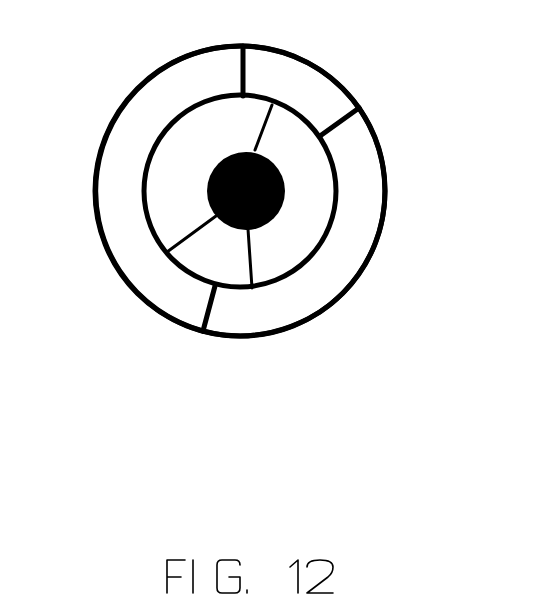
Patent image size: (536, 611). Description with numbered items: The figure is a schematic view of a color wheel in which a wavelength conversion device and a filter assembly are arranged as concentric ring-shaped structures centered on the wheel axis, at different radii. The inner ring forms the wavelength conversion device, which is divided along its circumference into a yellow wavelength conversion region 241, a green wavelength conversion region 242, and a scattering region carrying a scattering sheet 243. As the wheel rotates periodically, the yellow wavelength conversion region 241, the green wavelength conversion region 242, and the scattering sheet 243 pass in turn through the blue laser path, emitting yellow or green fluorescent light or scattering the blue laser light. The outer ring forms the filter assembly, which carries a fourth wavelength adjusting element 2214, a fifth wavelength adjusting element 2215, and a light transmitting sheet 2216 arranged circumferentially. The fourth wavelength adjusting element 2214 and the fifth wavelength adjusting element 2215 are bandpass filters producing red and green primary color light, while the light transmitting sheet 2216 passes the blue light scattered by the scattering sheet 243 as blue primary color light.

The yellow wavelength conversion region 241 is at (177, 145).
The green wavelength conversion region 242 is at (317, 193).
The scattering sheet 243 is at (232, 270).
The fourth wavelength adjusting element 2214 is at (125, 250).
The fifth wavelength adjusting element 2215 is at (310, 292).
The light transmitting sheet 2216 is at (320, 92).